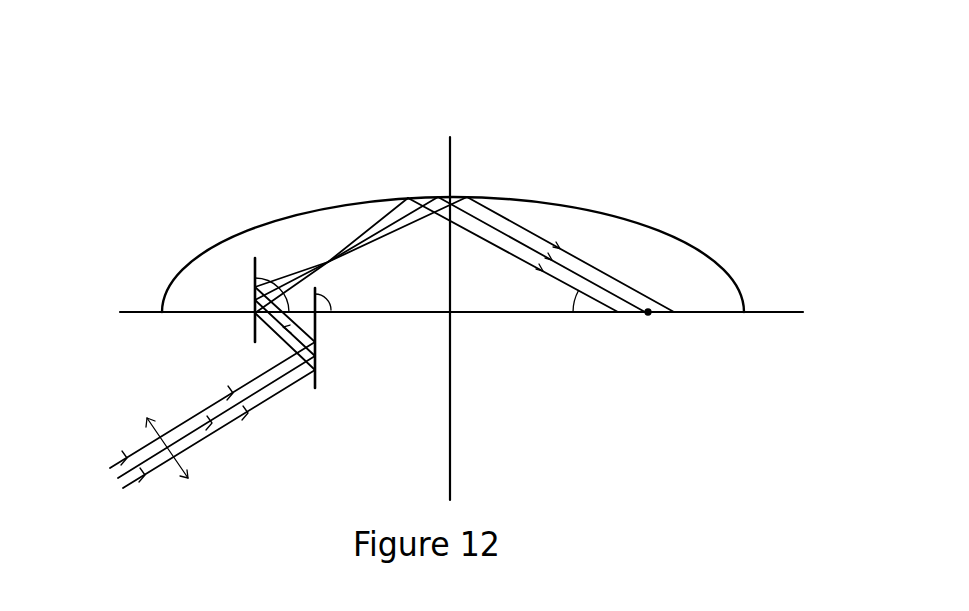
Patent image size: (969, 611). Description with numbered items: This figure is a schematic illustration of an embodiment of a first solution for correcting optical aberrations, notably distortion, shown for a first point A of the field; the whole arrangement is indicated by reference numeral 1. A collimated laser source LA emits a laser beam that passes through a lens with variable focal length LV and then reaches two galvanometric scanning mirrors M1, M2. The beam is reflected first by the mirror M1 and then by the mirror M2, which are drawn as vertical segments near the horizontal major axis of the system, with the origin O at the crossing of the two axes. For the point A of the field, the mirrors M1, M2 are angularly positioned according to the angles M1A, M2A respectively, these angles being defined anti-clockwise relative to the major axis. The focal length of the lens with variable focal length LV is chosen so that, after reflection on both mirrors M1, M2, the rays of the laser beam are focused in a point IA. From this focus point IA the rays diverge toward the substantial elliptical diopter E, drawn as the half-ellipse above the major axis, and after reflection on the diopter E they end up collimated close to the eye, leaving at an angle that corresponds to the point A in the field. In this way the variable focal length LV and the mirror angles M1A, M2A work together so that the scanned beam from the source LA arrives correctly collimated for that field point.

The optical device 1 is at (588, 125).
The substantial elliptical diopter E is at (685, 237).
The origin O is at (463, 327).
The focus point IA is at (333, 263).
The first galvanometric scanning mirror M1 is at (316, 345).
The second galvanometric scanning mirror M2 is at (253, 293).
The angle of the first mirror M1A is at (342, 299).
The angle of the second mirror M2A is at (276, 284).
The collimated laser source LA is at (112, 476).
The lens with variable focal length LV is at (148, 417).